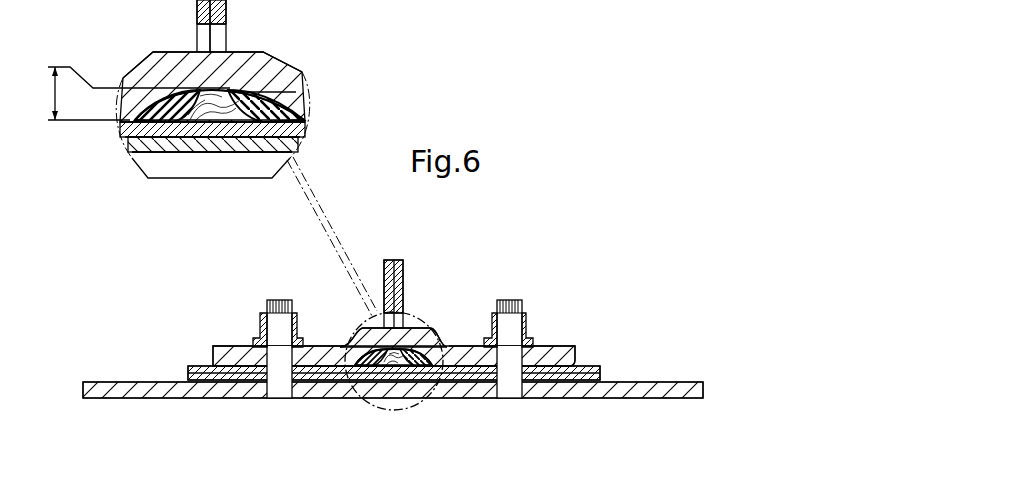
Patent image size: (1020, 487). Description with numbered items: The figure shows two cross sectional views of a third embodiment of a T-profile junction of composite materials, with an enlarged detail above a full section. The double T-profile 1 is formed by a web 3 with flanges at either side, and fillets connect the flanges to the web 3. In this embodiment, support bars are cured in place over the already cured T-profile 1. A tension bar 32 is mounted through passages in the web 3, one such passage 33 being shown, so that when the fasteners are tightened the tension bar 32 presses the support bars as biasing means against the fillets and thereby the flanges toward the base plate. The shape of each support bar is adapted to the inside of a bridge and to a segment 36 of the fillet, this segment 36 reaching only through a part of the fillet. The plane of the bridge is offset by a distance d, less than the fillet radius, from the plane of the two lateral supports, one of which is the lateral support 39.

The double T-profile 1 is at (471, 254).
The web 3 is at (395, 259).
The tension bar 32 is at (440, 330).
The passage 33 is at (218, 35).
The segment 36 is at (242, 143).
The lateral support 39 is at (235, 353).
The distance d is at (131, 93).